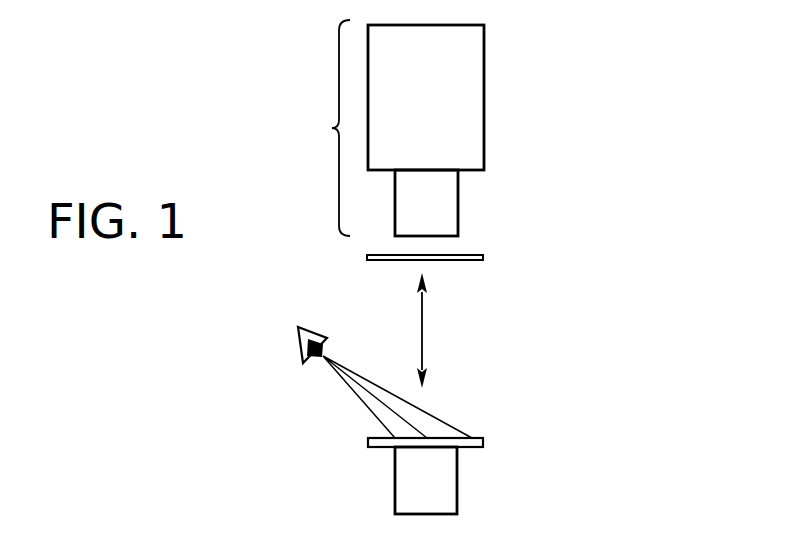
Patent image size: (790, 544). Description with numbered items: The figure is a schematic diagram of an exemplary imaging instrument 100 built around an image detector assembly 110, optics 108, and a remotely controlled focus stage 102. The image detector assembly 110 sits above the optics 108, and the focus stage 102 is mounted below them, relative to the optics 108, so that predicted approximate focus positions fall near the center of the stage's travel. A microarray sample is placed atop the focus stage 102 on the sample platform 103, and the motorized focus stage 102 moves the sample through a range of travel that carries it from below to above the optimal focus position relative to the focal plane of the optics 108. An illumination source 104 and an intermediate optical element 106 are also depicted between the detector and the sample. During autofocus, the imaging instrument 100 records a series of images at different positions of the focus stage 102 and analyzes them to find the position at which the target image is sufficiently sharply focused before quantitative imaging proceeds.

The imaging instrument 100 is at (620, 238).
The focus stage 102 is at (457, 483).
The sample platform 103 is at (368, 440).
The light source 104 is at (298, 340).
The filter / optical element 106 is at (483, 257).
The optics 108 is at (458, 203).
The image detector assembly 110 is at (379, 128).